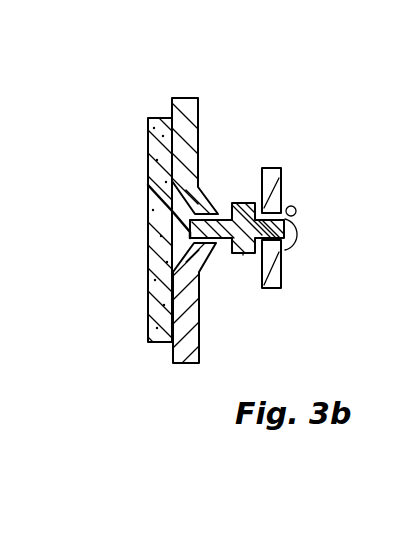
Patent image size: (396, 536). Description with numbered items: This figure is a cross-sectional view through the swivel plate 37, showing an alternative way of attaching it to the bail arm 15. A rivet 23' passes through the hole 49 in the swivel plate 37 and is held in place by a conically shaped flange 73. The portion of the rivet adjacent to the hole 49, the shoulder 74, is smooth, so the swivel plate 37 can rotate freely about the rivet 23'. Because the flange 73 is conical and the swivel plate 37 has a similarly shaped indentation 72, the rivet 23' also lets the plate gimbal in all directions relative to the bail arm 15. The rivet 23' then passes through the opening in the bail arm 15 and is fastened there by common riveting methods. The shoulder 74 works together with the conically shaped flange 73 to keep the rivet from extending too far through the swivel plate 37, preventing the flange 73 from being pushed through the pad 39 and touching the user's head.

The bail arm 15 is at (280, 167).
The rivet 23' is at (263, 304).
The swivel plate 37 is at (188, 97).
The pad 39 is at (148, 152).
The hole 49 is at (211, 248).
The indentation 72 is at (204, 192).
The conically shaped flange 73 is at (148, 254).
The shoulder 74 is at (225, 202).